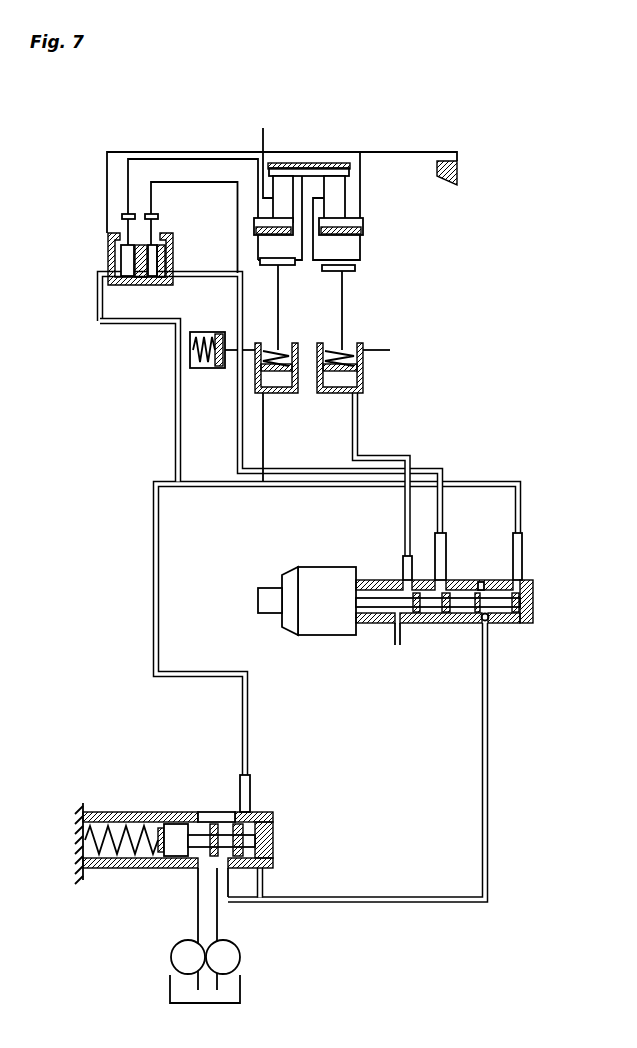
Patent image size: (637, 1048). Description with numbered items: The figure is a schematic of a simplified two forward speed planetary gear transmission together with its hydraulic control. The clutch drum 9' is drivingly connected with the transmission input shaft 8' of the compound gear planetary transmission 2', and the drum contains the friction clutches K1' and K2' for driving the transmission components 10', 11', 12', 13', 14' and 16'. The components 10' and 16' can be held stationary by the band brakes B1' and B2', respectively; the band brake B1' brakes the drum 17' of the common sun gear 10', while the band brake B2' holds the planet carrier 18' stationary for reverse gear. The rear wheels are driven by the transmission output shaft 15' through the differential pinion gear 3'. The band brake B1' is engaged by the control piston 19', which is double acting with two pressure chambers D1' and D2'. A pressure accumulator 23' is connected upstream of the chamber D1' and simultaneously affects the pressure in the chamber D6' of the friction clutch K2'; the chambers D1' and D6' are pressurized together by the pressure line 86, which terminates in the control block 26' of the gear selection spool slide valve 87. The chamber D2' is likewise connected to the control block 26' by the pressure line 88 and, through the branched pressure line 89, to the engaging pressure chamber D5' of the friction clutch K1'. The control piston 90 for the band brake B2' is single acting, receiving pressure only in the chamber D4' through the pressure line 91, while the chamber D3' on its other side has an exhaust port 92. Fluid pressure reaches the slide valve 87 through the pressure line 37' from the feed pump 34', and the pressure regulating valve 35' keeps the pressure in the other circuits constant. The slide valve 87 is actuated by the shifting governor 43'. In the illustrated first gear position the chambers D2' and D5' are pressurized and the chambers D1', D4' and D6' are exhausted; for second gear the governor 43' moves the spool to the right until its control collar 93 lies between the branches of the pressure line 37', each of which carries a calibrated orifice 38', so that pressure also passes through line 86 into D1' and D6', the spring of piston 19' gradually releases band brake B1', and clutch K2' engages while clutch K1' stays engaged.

The transmission input shaft 8' is at (282, 190).
The transmission component 13' is at (271, 153).
The transmission component 12' is at (297, 149).
The transmission component 16' is at (332, 138).
The common sun gear 10' is at (321, 138).
The transmission output shaft 15' is at (371, 184).
The differential pinion gear 3' is at (453, 146).
The compound gear planetary transmission 2' is at (329, 214).
The clutch drum 9' is at (115, 249).
The transmission component 11' is at (253, 229).
The transmission component 14' is at (365, 231).
The drum of the common sun gear 17' is at (282, 251).
The planet carrier 18' is at (337, 251).
The engaging pressure chamber D5' is at (95, 260).
The pressure chamber D6' is at (193, 258).
The friction clutch K1' is at (128, 264).
The friction clutch K2' is at (161, 264).
The band brake B1' is at (272, 304).
The band brake B2' is at (351, 307).
The pressure chamber D1' is at (272, 349).
The control piston 19' is at (287, 338).
The pressure chamber D3' is at (338, 349).
The control piston 90 is at (354, 343).
The exhaust port 92 is at (390, 350).
The pressure accumulator 23' is at (197, 350).
The pressure chamber D2' is at (234, 428).
The pressure chamber D4' is at (379, 384).
The branched pressure line 89 is at (175, 450).
The pressure line 86 is at (318, 476).
The pressure line 91 is at (403, 513).
The pressure line 88 is at (477, 482).
The shifting governor 43' is at (301, 589).
The control collar 93 is at (480, 580).
The control block 26' is at (444, 624).
The gear selection spool slide valve 87 is at (447, 624).
The calibrated orifices 38' is at (507, 643).
The pressure regulating valve 35' is at (174, 896).
The pressure line 37' is at (356, 785).
The feed pump 34' is at (234, 971).